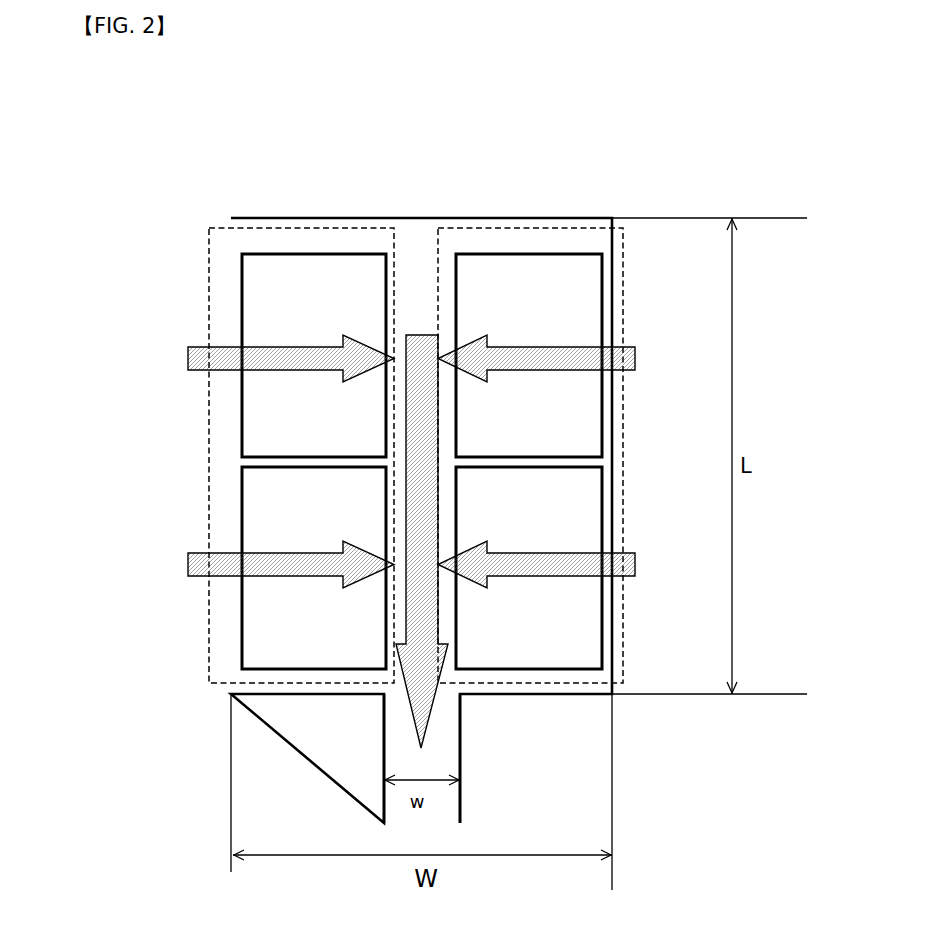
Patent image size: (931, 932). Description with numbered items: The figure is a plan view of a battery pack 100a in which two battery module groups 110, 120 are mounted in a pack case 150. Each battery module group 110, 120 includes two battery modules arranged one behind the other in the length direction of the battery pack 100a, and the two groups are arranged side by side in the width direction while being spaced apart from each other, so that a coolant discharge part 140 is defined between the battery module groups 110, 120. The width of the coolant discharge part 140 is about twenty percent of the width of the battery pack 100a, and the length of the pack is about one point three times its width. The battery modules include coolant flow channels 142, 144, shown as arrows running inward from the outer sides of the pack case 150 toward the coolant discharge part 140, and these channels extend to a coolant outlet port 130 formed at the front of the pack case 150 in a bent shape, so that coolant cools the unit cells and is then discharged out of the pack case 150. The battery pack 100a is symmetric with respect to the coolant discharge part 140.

The battery pack 100a is at (207, 164).
The battery module group 110 is at (208, 402).
The battery module group 120 is at (623, 293).
The coolant outlet port 130 is at (393, 692).
The coolant discharge part 140 is at (410, 292).
The coolant flow channel 142 is at (190, 365).
The coolant flow channel 144 is at (190, 570).
The pack case 150 is at (500, 217).